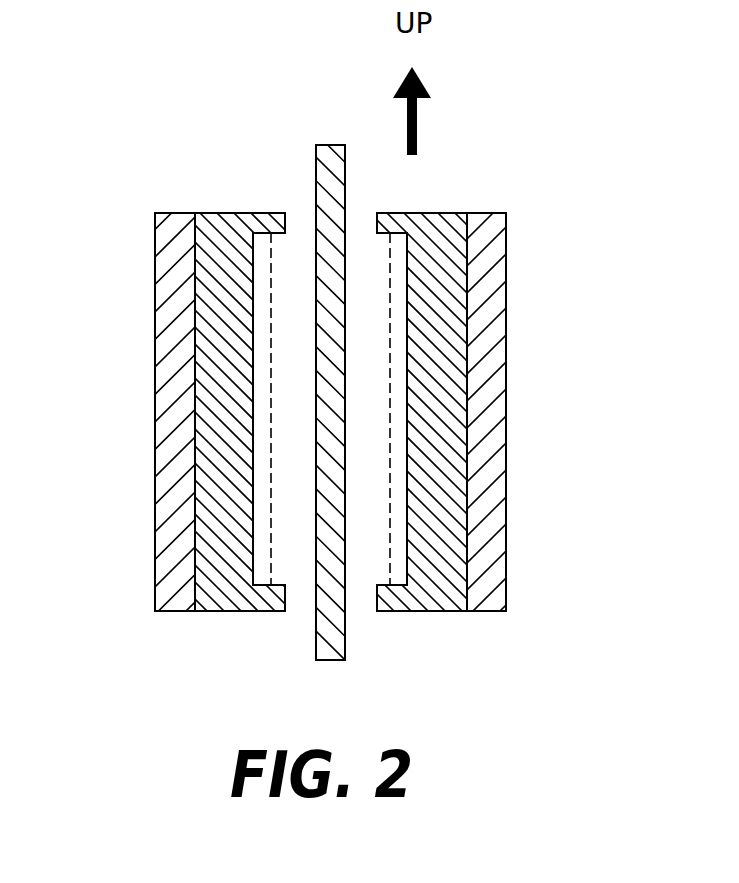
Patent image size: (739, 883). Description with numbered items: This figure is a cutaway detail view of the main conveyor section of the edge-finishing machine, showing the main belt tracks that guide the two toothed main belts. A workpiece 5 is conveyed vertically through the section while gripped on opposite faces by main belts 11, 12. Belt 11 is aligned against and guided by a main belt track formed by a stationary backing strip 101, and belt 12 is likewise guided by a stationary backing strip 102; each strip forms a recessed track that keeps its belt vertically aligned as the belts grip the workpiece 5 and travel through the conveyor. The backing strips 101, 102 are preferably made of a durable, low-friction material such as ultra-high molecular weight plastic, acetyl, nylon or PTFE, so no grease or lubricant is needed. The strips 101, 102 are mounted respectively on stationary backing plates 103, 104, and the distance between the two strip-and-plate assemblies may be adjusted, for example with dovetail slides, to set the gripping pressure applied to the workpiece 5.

The workpiece 5 is at (317, 145).
The main belt 11 is at (300, 585).
The main belt 12 is at (360, 585).
The stationary backing strip 101 is at (230, 213).
The stationary backing strip 102 is at (433, 213).
The stationary backing plate 103 is at (157, 422).
The stationary backing plate 104 is at (507, 312).